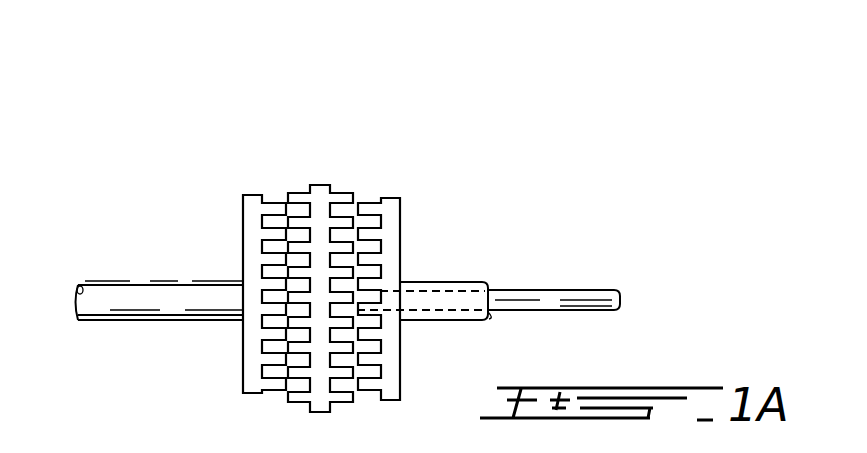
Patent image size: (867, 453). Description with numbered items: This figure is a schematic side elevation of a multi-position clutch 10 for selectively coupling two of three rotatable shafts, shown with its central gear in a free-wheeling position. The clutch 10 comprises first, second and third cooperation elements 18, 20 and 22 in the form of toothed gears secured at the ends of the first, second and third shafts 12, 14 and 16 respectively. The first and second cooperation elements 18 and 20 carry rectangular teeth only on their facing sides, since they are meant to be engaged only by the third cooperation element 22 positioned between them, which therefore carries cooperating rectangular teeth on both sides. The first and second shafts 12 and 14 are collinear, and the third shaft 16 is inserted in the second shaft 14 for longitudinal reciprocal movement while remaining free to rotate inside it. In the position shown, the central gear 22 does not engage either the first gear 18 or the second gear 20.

The multi-position clutch 10 is at (258, 155).
The first rotatable shaft 12 is at (115, 296).
The second rotatable shaft 14 is at (440, 287).
The third rotatable shaft 16 is at (566, 298).
The first cooperation element 18 is at (250, 224).
The second cooperation element 20 is at (393, 211).
The third cooperation element 22 is at (318, 183).